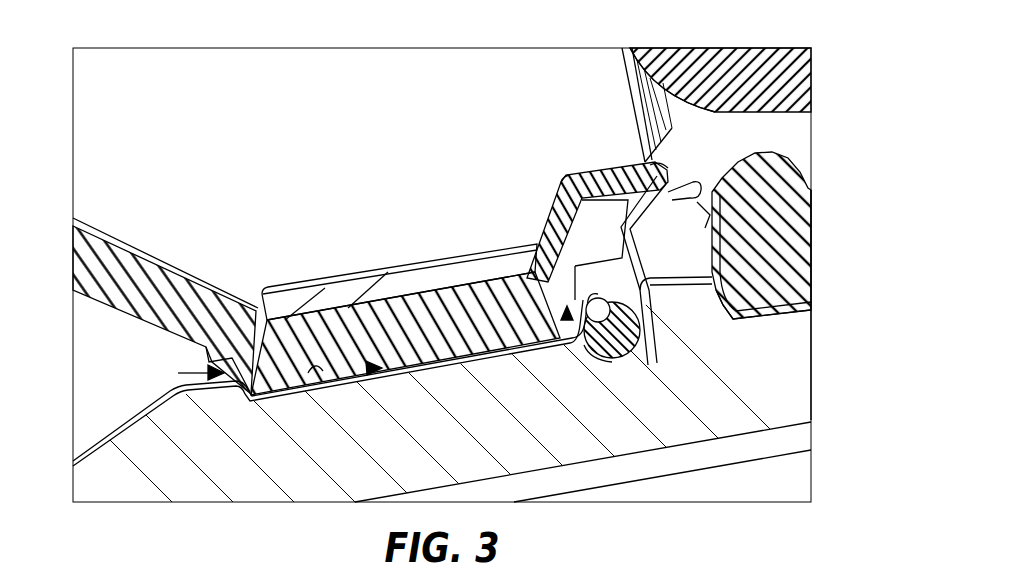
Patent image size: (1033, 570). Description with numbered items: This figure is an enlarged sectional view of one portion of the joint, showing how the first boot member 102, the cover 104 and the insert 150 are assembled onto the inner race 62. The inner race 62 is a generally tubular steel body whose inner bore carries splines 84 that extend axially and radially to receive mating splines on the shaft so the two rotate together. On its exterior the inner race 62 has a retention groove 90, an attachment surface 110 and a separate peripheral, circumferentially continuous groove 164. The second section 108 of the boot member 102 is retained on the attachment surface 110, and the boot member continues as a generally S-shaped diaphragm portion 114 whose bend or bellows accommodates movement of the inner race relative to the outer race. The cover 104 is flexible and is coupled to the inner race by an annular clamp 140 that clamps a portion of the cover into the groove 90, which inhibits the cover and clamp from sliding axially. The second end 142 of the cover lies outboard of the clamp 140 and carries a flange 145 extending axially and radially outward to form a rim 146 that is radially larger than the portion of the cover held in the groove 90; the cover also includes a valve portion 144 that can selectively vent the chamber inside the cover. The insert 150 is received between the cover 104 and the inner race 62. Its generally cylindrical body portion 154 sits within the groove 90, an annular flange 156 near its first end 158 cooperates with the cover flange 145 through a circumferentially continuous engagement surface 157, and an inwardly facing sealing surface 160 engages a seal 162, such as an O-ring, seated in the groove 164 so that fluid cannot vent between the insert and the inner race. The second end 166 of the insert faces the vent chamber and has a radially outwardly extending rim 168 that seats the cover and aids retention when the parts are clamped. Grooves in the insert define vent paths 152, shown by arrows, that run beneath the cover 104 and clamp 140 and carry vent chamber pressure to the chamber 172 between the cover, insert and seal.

The inner race 62 is at (818, 364).
The splines 84 is at (705, 458).
The retention groove 90 is at (313, 368).
The first boot member 102 is at (812, 64).
The cover 104 is at (125, 270).
The second section 108 is at (773, 293).
The attachment surface 110 is at (805, 307).
The diaphragm portion 114 is at (694, 66).
The annular clamp 140 is at (373, 268).
The second end 142 is at (678, 162).
The valve portion 144 is at (684, 160).
The flange 145 is at (560, 188).
The rim 146 is at (684, 144).
The insert 150 is at (642, 345).
The vent path 152 is at (193, 375).
The body portion 154 is at (422, 374).
The annular flange 156 is at (700, 210).
The engagement surface 157 is at (634, 206).
The first end 158 is at (696, 190).
The sealing surface 160 is at (575, 330).
The seal 162 is at (585, 365).
The groove 164 is at (616, 355).
The second end 166 is at (203, 353).
The rim 168 is at (221, 350).
The chamber 172 is at (560, 198).